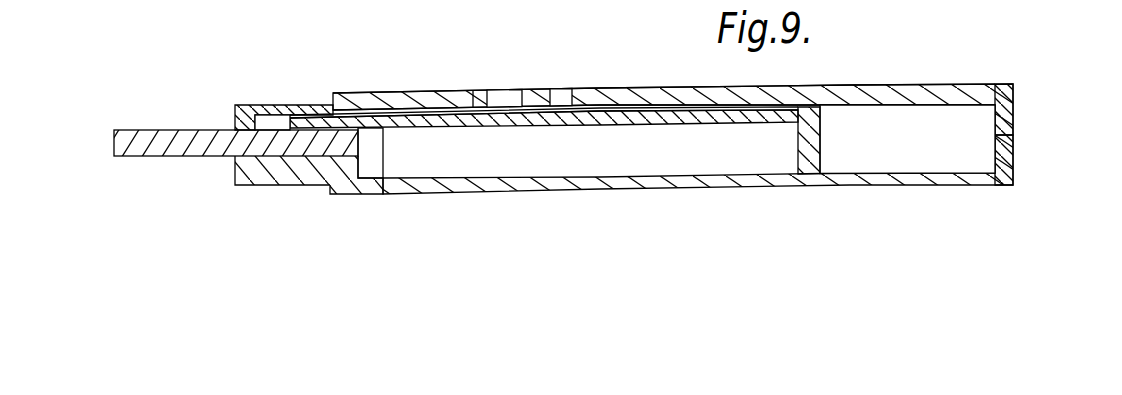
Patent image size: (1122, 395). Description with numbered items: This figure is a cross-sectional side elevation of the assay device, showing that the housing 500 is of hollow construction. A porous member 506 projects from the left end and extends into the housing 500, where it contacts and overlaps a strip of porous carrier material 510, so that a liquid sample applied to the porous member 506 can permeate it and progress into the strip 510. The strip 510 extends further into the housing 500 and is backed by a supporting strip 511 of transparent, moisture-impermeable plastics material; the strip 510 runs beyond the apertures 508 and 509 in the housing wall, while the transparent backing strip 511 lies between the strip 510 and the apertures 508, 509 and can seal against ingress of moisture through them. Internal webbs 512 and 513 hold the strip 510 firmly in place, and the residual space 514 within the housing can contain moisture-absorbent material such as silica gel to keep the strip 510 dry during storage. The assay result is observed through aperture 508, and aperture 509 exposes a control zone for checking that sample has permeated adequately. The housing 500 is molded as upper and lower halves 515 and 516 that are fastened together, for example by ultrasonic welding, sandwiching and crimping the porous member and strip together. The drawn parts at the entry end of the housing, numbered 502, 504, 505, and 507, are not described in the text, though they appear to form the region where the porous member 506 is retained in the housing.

The housing 500 is at (748, 188).
The upper connector block 502 is at (286, 105).
The connector body 504 is at (330, 189).
The lower connector block 505 is at (235, 168).
The porous member 506 is at (184, 130).
The top plate 507 is at (368, 93).
The aperture 508 is at (504, 98).
The aperture 509 is at (568, 97).
The strip of porous carrier material 510 is at (617, 127).
The supporting strip 511 is at (484, 108).
The webb 512 is at (368, 145).
The webb 513 is at (798, 142).
The residual space 514 is at (903, 143).
The upper half 515 is at (1005, 112).
The lower half 516 is at (1005, 155).